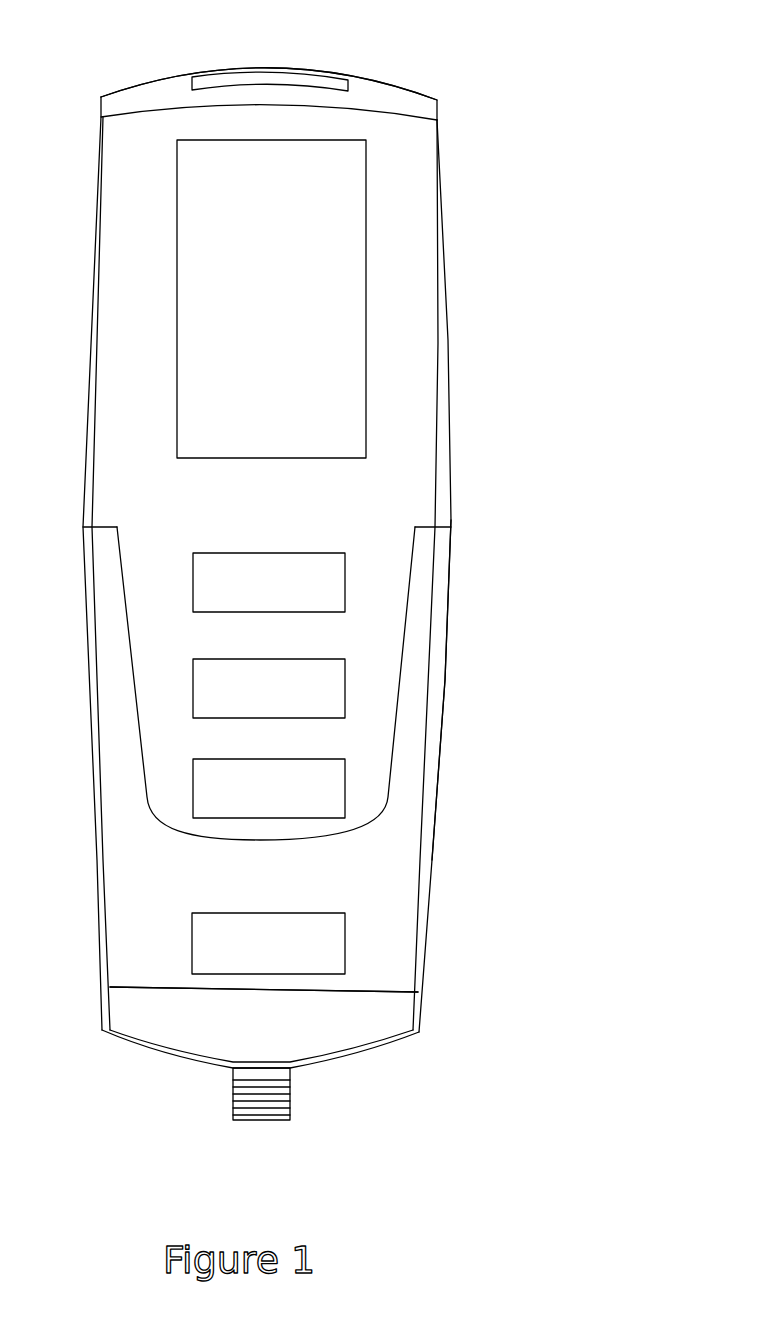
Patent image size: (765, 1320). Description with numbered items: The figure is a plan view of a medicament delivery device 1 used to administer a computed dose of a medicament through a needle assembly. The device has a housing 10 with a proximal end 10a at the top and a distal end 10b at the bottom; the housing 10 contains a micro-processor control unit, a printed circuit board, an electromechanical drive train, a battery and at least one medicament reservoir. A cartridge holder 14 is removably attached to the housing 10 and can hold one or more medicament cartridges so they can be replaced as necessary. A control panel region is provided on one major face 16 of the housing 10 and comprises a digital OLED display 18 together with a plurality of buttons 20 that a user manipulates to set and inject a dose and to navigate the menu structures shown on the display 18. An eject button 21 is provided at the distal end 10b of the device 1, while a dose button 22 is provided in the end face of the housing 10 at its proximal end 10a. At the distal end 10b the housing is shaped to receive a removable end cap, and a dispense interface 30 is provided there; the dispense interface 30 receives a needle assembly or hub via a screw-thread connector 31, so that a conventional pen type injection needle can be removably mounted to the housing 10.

The medicament delivery device 1 is at (329, 583).
The housing 10 is at (296, 582).
The proximal end 10a is at (422, 92).
The distal end 10b is at (418, 977).
The cartridge holder 14 is at (432, 617).
The major face 16 is at (266, 665).
The digital OLED display 18 is at (292, 302).
The buttons 20 is at (348, 781).
The eject button 21 is at (287, 928).
The dose button 22 is at (270, 78).
The dispense interface 30 is at (150, 1030).
The screw-thread connector 31 is at (290, 1113).